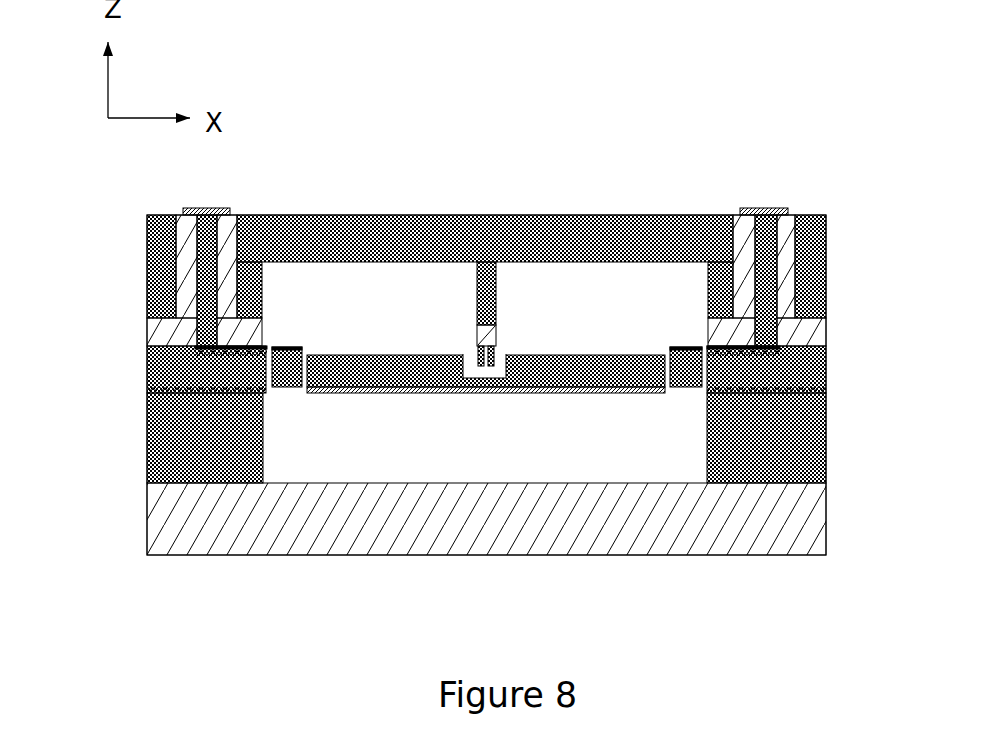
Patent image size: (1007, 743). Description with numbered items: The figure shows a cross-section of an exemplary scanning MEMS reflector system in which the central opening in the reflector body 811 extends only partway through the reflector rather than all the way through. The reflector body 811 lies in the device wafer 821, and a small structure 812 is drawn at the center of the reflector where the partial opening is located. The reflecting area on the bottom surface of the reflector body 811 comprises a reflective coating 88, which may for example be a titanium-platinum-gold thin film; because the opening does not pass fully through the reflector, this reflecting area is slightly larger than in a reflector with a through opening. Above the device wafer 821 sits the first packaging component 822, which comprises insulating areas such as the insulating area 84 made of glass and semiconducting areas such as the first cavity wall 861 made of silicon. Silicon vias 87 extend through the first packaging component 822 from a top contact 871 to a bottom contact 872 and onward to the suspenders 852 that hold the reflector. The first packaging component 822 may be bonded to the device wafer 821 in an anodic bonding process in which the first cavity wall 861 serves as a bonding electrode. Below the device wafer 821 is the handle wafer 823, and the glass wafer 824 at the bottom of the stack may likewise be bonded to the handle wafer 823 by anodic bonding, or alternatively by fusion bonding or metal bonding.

The reflector body 811 is at (372, 372).
The spring/hinge structure 812 is at (485, 363).
The first cavity wall 861 is at (530, 252).
The insulating area 84 is at (728, 327).
The silicon via 87 is at (768, 282).
The top contact 871 is at (753, 205).
The bottom contact 872 is at (743, 357).
The reflective coating 88 is at (547, 393).
The suspender 852 is at (685, 372).
The first packaging component 822 is at (434, 195).
The device wafer 821 is at (439, 394).
The handle wafer 823 is at (106, 397).
The glass wafer 824 is at (106, 482).